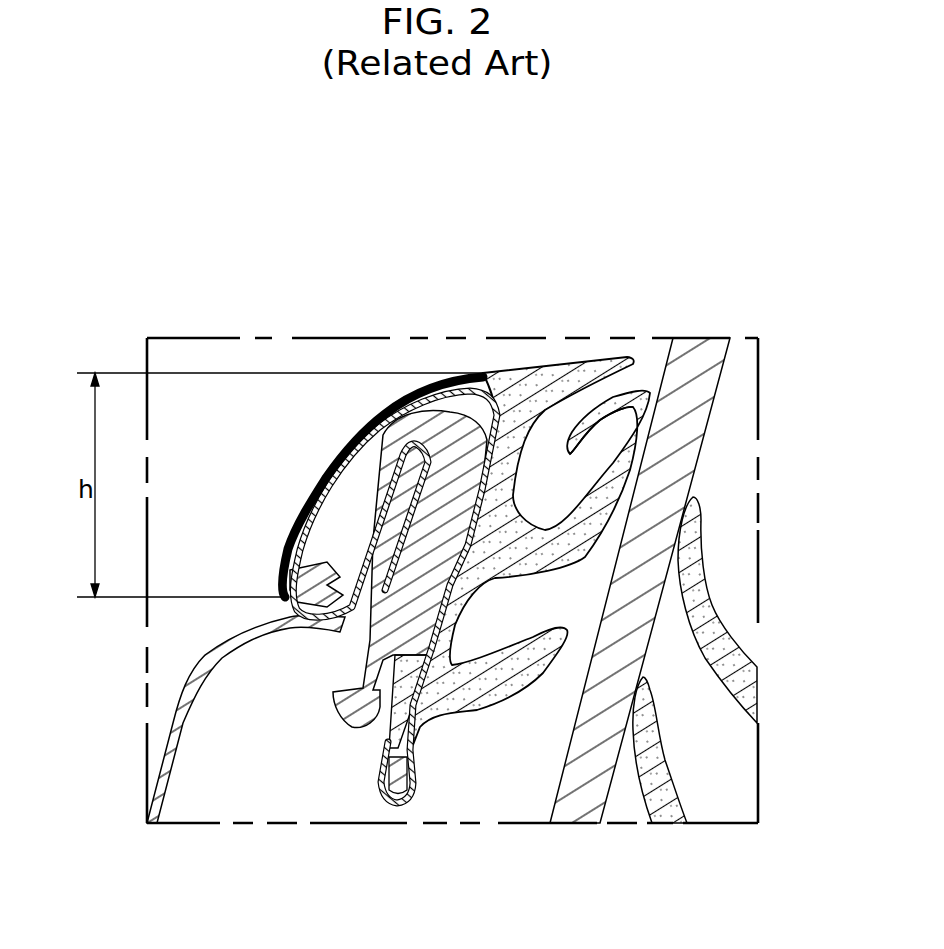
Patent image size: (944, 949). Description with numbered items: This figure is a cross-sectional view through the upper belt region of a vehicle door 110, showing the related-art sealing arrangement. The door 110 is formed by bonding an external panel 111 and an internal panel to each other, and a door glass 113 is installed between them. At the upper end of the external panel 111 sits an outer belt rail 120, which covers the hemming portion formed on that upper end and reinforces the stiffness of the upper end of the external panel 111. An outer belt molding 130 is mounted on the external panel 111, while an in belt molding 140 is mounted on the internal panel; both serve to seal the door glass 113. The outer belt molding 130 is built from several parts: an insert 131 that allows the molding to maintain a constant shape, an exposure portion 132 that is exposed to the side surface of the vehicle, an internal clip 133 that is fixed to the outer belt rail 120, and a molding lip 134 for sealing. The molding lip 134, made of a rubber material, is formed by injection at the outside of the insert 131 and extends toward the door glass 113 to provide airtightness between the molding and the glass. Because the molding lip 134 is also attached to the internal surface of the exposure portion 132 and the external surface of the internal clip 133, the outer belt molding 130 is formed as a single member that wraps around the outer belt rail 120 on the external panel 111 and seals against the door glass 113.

The door 110 is at (272, 475).
The external panel 111 is at (172, 721).
The door glass 113 is at (682, 453).
The outer belt rail 120 is at (363, 633).
The outer belt molding 130 is at (580, 224).
The insert 131 is at (457, 373).
The exposure portion 132 is at (318, 473).
The internal clip 133 is at (390, 452).
The molding lip 134 is at (617, 480).
The in belt molding 140 is at (717, 630).